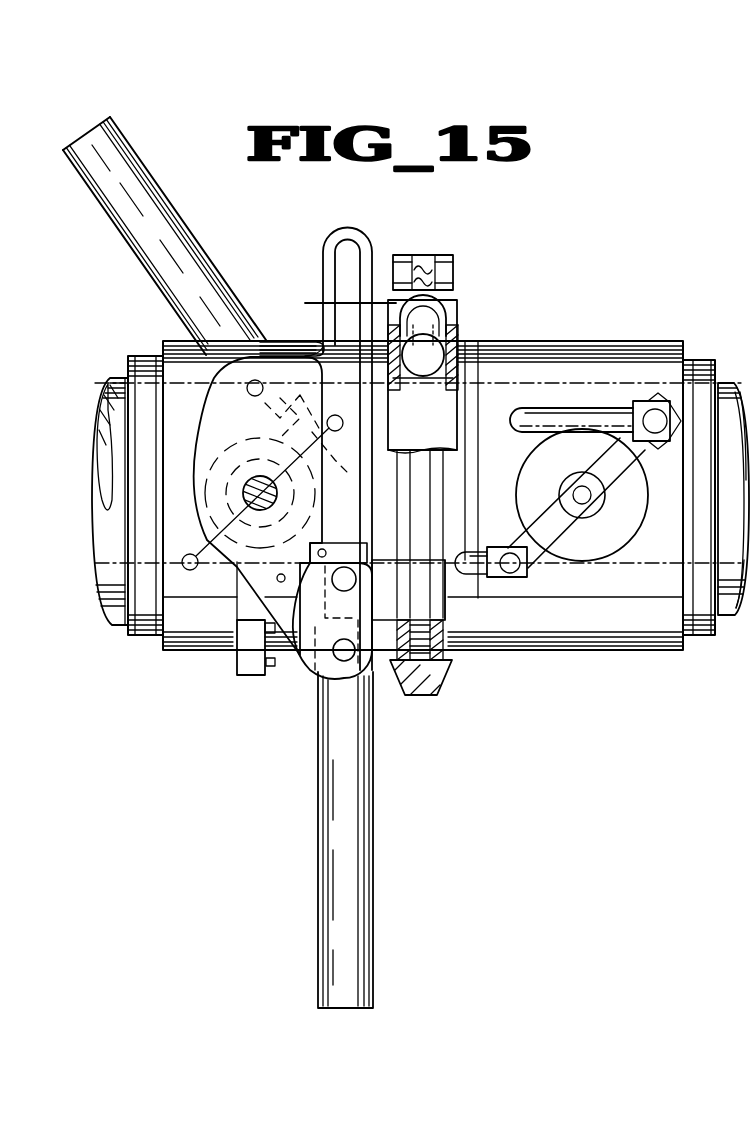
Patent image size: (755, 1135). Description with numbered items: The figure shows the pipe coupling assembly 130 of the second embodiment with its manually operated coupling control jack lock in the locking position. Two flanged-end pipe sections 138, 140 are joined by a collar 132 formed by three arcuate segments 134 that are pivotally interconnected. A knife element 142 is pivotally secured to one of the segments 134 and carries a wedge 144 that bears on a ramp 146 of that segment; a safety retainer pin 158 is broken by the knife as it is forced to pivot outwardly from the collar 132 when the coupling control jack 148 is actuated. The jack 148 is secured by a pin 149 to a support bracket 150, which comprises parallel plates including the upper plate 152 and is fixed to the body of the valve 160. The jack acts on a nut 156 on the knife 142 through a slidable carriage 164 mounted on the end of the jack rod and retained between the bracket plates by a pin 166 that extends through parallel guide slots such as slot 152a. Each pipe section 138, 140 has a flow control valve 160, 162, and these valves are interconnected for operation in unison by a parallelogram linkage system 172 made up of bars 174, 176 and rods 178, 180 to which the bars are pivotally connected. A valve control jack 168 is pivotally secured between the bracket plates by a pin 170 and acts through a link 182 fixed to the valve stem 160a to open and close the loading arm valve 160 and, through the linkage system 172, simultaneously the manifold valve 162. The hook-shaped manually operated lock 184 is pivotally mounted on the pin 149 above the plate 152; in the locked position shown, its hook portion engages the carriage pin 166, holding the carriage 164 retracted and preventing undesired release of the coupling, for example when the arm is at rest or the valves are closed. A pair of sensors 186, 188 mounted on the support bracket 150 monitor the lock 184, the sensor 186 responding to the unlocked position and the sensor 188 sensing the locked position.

The pipe coupling assembly 130 is at (478, 291).
The collar 132 is at (456, 693).
The arcuate segments 134 is at (453, 385).
The flanged-end pipe section 138 is at (117, 613).
The flanged-end pipe section 140 is at (740, 615).
The knife element 142 is at (461, 316).
The wedge 144 is at (329, 296).
The ramp 146 is at (452, 275).
The coupling control jack 148 is at (318, 775).
The pin 149 is at (364, 668).
The support bracket 150 is at (200, 450).
The upper plate 152 is at (289, 350).
The guide slot 152a is at (341, 280).
The nut 156 is at (453, 338).
The safety retainer pin 158 is at (420, 262).
The flow control valve 160 is at (176, 350).
The valve stem 160a is at (268, 501).
The flow control valve 162 is at (628, 345).
The slidable carriage 164 is at (452, 606).
The pin 166 is at (357, 580).
The valve control jack 168 is at (166, 203).
The pin 170 is at (247, 392).
The parallelogram linkage system 172 is at (572, 396).
The bar 174 is at (288, 448).
The bar 176 is at (530, 571).
The rod 178 is at (578, 432).
The rod 180 is at (483, 543).
The link 182 is at (302, 545).
The manually operated lock 184 is at (298, 625).
The sensor 186 is at (268, 670).
The sensor 188 is at (263, 628).